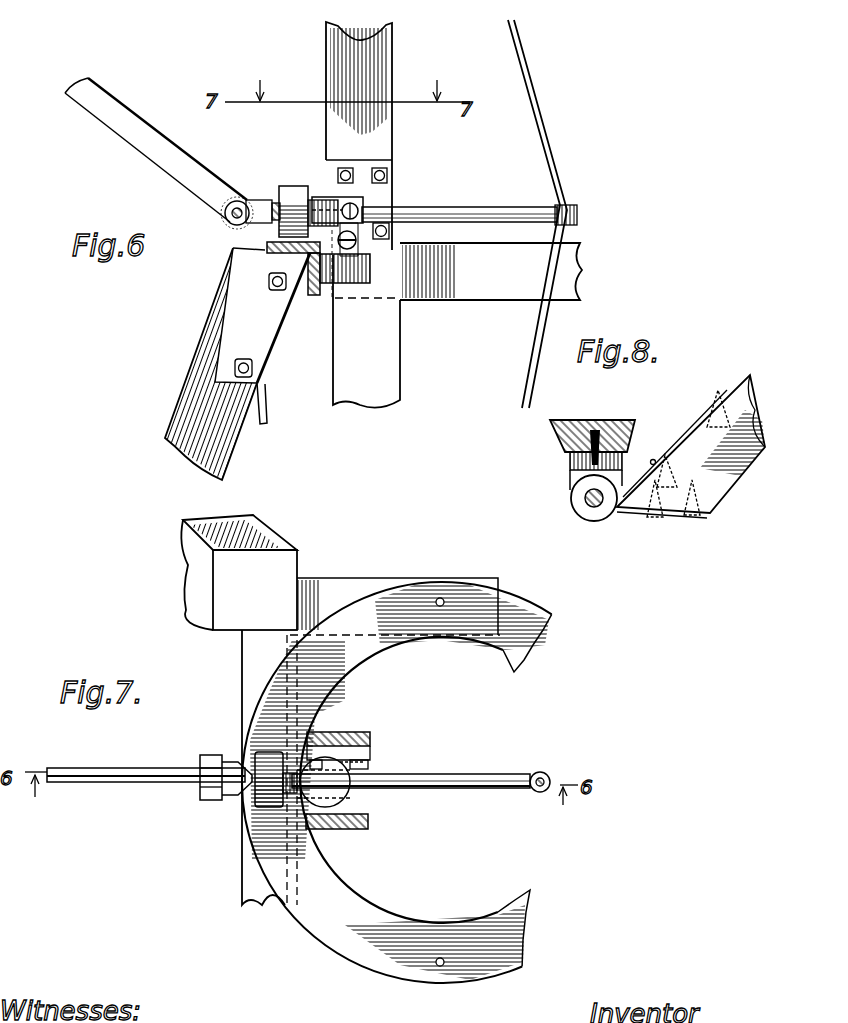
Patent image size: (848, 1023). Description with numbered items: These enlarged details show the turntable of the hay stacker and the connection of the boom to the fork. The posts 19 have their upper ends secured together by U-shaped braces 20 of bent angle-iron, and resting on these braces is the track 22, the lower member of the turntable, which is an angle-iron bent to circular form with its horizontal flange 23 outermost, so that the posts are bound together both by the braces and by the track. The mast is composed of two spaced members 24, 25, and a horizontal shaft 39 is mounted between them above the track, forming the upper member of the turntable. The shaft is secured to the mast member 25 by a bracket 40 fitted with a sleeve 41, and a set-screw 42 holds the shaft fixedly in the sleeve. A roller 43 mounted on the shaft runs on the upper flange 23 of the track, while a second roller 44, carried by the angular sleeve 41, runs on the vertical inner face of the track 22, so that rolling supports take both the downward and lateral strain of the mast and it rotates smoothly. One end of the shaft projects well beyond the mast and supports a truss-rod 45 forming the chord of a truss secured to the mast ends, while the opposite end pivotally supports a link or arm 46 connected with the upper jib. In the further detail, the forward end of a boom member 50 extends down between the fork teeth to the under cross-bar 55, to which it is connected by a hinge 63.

In FIG. 6, the posts 19 is at (185, 381).
In FIG. 7, the posts 19 is at (285, 568).
In FIG. 6, the U-shaped braces 20 is at (263, 388).
In FIG. 7, the U-shaped braces 20 is at (355, 592).
In FIG. 6, the track 22 is at (512, 280).
In FIG. 7, the track 22 is at (487, 652).
In FIG. 6, the horizontal flange 23 is at (268, 246).
In FIG. 7, the horizontal flange 23 is at (340, 700).
In FIG. 7, the mast member 24 is at (355, 828).
In FIG. 6, the mast member 25 is at (378, 143).
In FIG. 7, the mast member 25 is at (373, 733).
In FIG. 6, the horizontal shaft 39 is at (455, 216).
In FIG. 7, the horizontal shaft 39 is at (507, 780).
In FIG. 6, the bracket 40 is at (337, 195).
In FIG. 6, the sleeve 41 is at (318, 200).
In FIG. 7, the sleeve 41 is at (295, 776).
In FIG. 6, the set-screw 42 is at (357, 208).
In FIG. 7, the set-screw 42 is at (342, 779).
In FIG. 6, the roller 43 is at (280, 193).
In FIG. 7, the roller 43 is at (263, 760).
In FIG. 6, the roller 44 is at (352, 268).
In FIG. 7, the roller 44 is at (355, 797).
In FIG. 6, the truss-rod 45 is at (557, 172).
In FIG. 7, the truss-rod 45 is at (545, 777).
In FIG. 6, the link or arm 46 is at (142, 135).
In FIG. 7, the link or arm 46 is at (120, 780).
In FIG. 8, the boom member 50 is at (713, 483).
In FIG. 8, the under cross-bar 55 is at (578, 420).
In FIG. 8, the hinges 63 is at (595, 516).